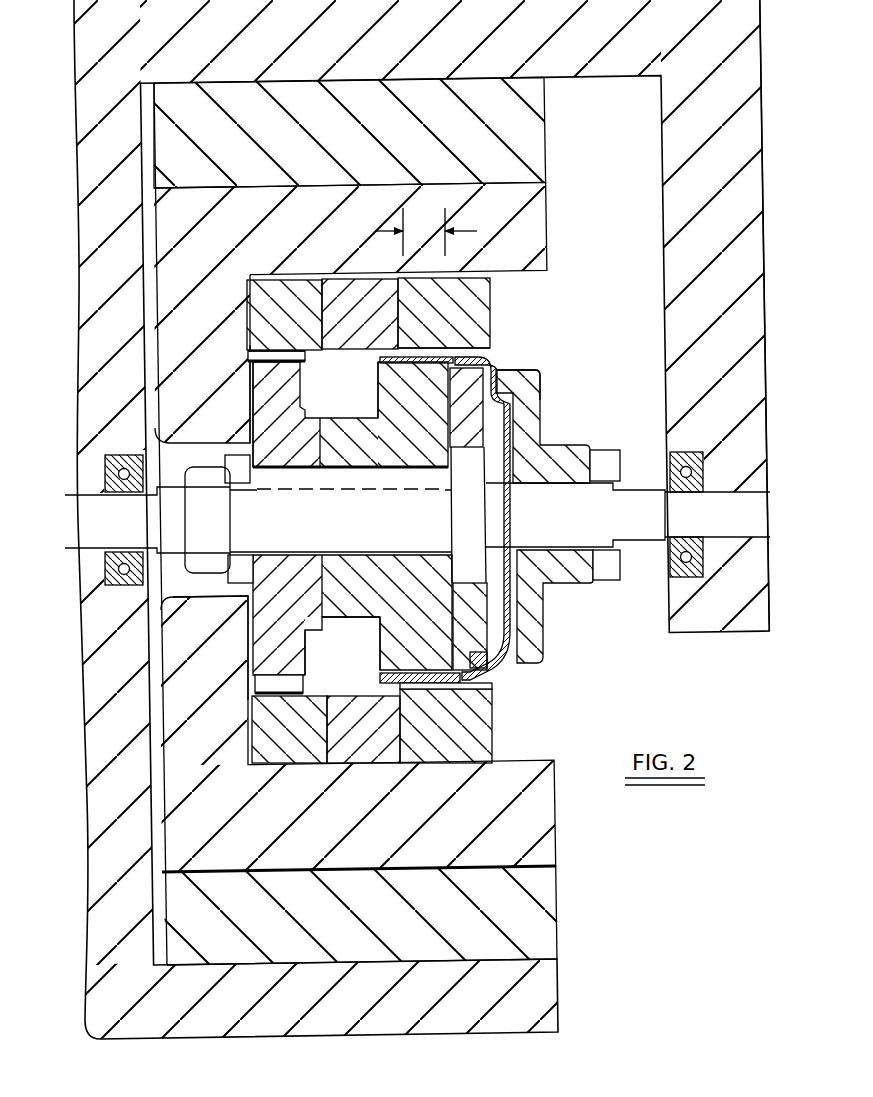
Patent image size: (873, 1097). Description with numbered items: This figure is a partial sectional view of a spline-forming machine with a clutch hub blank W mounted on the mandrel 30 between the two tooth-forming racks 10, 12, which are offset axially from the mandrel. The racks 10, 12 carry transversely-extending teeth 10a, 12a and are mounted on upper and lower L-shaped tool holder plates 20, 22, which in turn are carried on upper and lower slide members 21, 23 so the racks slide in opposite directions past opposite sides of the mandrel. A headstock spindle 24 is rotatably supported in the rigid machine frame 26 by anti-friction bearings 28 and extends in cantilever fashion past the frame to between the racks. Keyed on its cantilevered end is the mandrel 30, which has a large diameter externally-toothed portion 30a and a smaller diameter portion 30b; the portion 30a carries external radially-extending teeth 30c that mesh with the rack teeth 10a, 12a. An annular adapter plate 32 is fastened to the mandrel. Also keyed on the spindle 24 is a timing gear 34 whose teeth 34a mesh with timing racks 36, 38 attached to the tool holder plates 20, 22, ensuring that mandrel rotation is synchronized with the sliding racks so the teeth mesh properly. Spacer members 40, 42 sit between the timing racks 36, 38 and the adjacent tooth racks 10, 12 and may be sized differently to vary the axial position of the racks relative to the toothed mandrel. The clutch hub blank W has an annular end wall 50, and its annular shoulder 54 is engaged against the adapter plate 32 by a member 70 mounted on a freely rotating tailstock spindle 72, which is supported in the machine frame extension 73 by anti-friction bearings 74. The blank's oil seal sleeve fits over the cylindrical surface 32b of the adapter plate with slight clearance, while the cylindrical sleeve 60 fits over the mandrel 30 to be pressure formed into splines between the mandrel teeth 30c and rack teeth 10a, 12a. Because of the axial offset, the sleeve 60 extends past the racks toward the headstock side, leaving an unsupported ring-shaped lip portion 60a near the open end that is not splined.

The tooth-forming rack 10 is at (485, 740).
The rack teeth 10a is at (490, 685).
The tooth-forming rack 12 is at (481, 299).
The rack teeth 12a is at (494, 365).
The upper tool holder plate 20 is at (541, 210).
The upper slide member 21 is at (545, 138).
The lower tool holder plate 22 is at (540, 833).
The lower slide member 23 is at (537, 932).
The headstock spindle 24 is at (227, 540).
The machine frame 26 is at (97, 752).
The anti-friction bearings 28 is at (123, 457).
The mandrel 30 is at (372, 403).
The large diameter externally-toothed portion 30a is at (380, 650).
The smaller diameter portion 30b is at (312, 627).
The mandrel teeth 30c is at (384, 381).
The annular adapter plate 32 is at (512, 393).
The cylindrical surface of the adapter plate 32b is at (460, 680).
The timing gear 34 is at (258, 410).
The timing gear teeth 34a is at (263, 405).
The upper timing rack 36 is at (292, 283).
The lower timing rack 38 is at (265, 725).
The spacer member 40 is at (348, 288).
The spacer member 42 is at (358, 745).
The annular end wall 50 is at (540, 607).
The annular shoulder 54 is at (491, 380).
The cylindrical sleeve 60 is at (440, 690).
The lip portion 60a is at (383, 356).
The member 70 is at (527, 428).
The tailstock spindle 72 is at (637, 540).
The machine frame extension 73 is at (738, 200).
The anti-friction bearings 74 is at (690, 453).
The clutch hub blank W is at (520, 628).